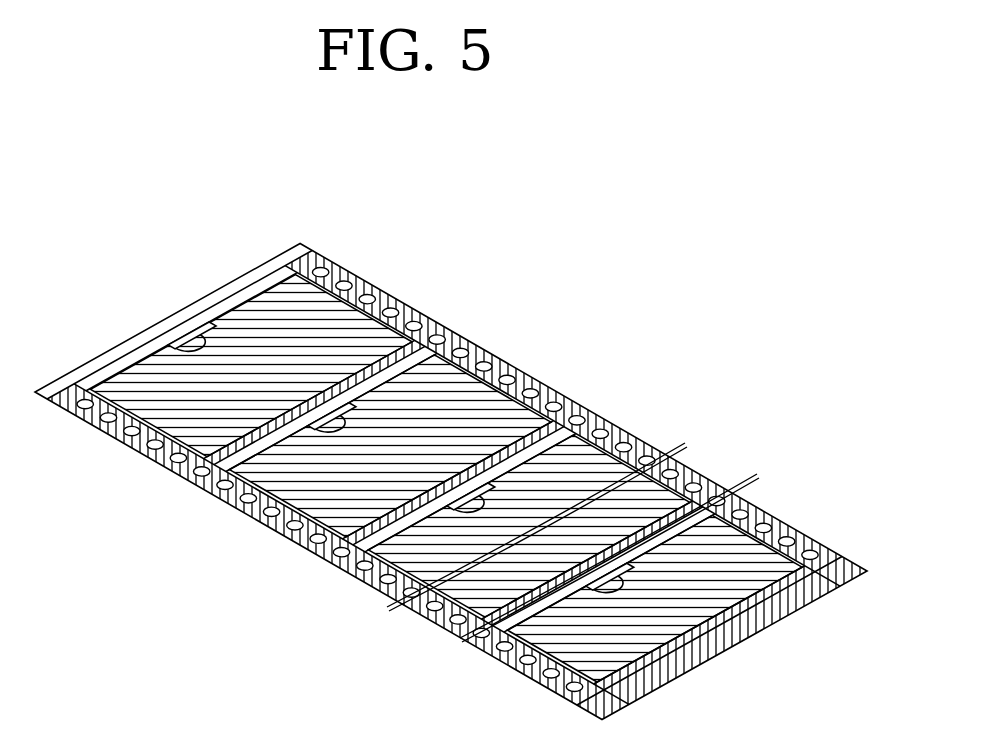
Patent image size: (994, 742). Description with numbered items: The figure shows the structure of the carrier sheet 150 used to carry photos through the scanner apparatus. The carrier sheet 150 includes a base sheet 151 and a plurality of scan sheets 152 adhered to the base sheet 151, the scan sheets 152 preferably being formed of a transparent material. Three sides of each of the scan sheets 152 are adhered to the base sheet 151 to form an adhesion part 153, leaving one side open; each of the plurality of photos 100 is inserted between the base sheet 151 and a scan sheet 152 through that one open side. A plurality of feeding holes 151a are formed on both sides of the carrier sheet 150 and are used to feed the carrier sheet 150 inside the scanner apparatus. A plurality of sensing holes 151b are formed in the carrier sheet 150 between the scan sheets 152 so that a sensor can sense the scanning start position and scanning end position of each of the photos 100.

The photo 100 is at (440, 387).
The carrier sheet 150 is at (610, 373).
The base sheet 151 is at (285, 258).
The feeding holes 151a is at (360, 290).
The sensing holes 151b is at (247, 410).
The scan sheet 152 is at (237, 468).
The adhesion part 153 is at (542, 418).